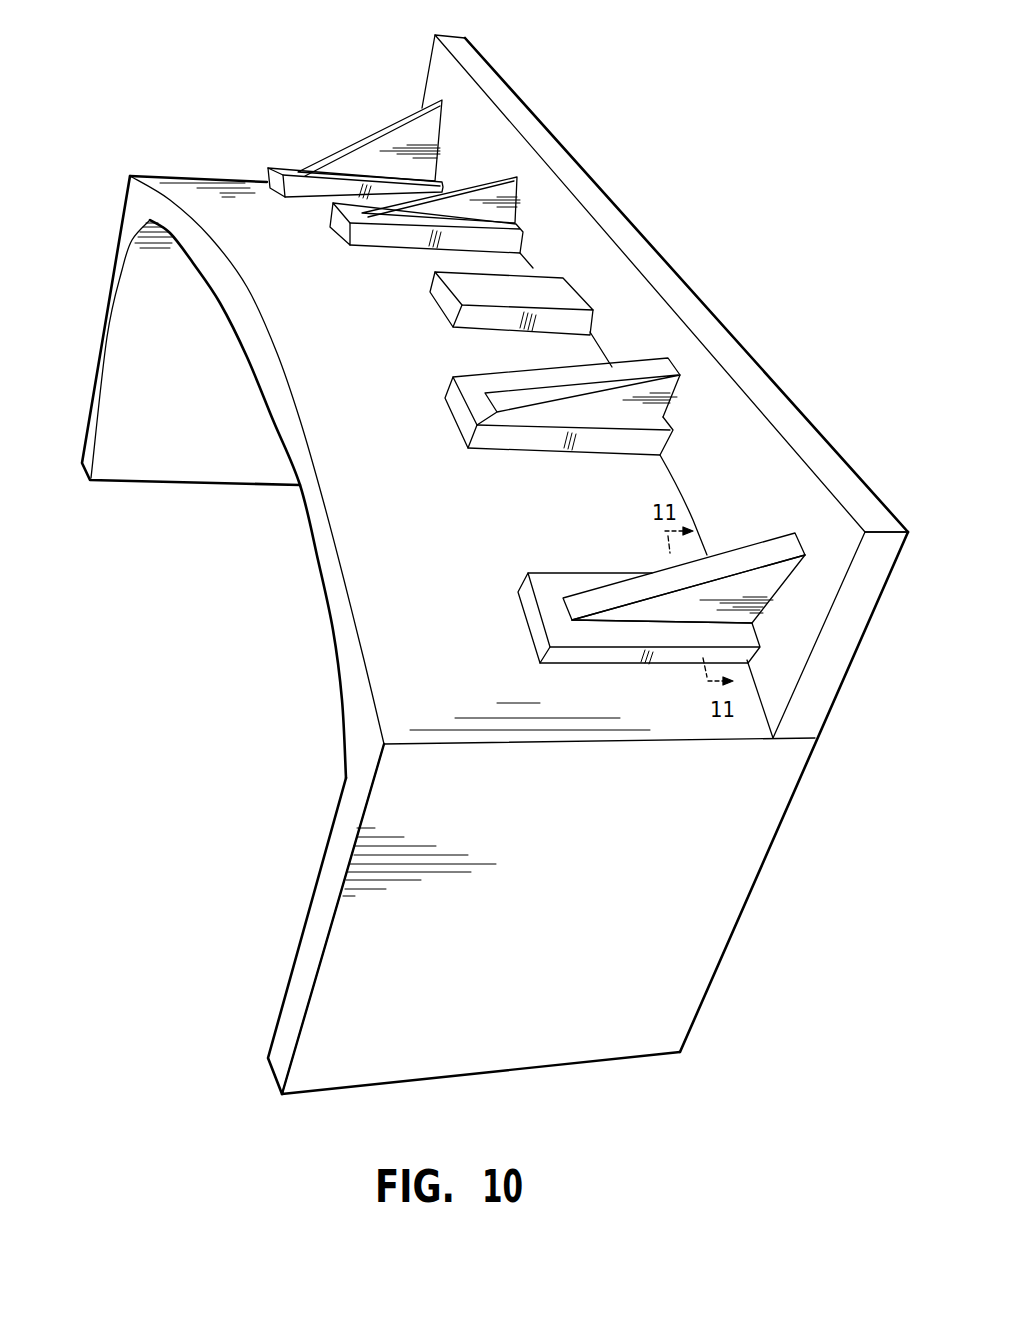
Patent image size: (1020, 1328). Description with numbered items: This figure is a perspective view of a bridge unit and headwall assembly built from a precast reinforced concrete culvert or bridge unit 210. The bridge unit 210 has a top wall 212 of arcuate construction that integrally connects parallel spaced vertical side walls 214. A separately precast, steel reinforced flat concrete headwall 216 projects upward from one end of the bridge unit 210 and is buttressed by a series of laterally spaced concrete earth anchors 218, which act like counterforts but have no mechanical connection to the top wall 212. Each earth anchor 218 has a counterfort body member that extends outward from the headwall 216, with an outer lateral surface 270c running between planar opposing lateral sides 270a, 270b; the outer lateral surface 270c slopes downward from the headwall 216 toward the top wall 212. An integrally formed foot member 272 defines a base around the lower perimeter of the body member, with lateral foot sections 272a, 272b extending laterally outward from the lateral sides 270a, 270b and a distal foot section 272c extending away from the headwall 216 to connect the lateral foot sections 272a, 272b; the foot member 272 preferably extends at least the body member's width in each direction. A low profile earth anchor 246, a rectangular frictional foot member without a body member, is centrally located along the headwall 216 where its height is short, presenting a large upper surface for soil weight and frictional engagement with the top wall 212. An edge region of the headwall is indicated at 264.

The bridge unit 210 is at (345, 776).
The top wall 212 is at (360, 528).
The side walls 214 is at (97, 375).
The headwall 216 is at (800, 425).
The earth anchors 218 is at (527, 635).
The low profile earth anchor 246 is at (463, 290).
The end edge 264 is at (818, 560).
The lateral side 270a is at (597, 590).
The lateral side 270b is at (757, 582).
The outer lateral surface 270c is at (640, 592).
The foot member 272 is at (606, 661).
The lateral foot section 272a is at (563, 582).
The lateral foot section 272b is at (600, 638).
The distal foot section 272c is at (547, 605).